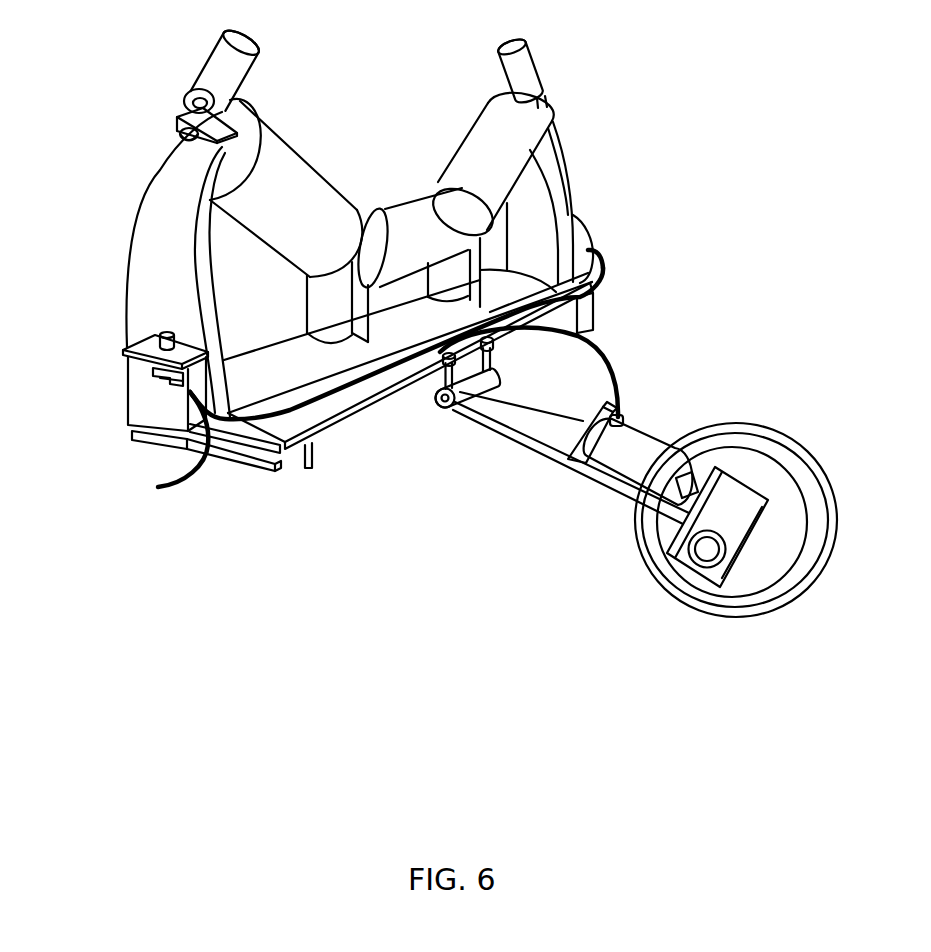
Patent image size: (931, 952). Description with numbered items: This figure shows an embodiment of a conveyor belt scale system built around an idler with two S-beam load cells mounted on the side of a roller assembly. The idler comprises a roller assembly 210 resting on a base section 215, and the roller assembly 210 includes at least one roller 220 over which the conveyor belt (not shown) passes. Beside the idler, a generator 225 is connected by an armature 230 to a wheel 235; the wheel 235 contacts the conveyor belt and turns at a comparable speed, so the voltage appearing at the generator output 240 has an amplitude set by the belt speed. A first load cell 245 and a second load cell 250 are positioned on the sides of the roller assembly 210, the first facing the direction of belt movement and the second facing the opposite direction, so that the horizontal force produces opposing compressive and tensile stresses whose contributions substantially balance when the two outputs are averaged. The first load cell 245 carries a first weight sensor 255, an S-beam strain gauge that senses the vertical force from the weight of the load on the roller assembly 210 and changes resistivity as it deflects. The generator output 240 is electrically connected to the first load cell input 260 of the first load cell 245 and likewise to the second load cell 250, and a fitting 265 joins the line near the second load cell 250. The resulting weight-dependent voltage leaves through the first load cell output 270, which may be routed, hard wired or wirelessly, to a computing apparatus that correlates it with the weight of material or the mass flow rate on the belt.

The roller assembly 210 is at (160, 216).
The base section 215 is at (333, 410).
The roller 220 is at (396, 213).
The generator 225 is at (638, 437).
The armature 230 is at (683, 492).
The wheel 235 is at (770, 425).
The generator output 240 is at (611, 357).
The first load cell 245 is at (150, 345).
The second load cell 250 is at (585, 237).
The first weight sensor 255 is at (155, 378).
The first load cell input 260 is at (375, 383).
The line fitting 265 is at (600, 290).
The first load cell output 270 is at (193, 474).